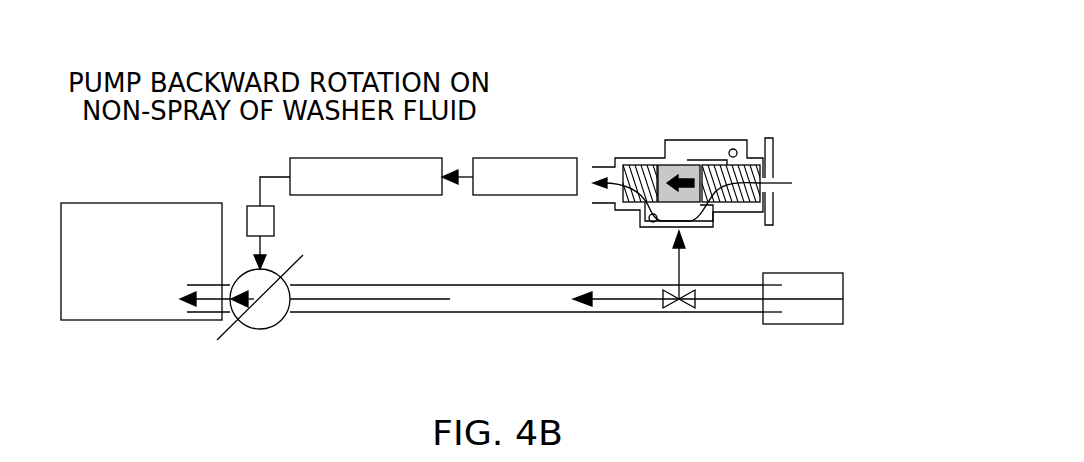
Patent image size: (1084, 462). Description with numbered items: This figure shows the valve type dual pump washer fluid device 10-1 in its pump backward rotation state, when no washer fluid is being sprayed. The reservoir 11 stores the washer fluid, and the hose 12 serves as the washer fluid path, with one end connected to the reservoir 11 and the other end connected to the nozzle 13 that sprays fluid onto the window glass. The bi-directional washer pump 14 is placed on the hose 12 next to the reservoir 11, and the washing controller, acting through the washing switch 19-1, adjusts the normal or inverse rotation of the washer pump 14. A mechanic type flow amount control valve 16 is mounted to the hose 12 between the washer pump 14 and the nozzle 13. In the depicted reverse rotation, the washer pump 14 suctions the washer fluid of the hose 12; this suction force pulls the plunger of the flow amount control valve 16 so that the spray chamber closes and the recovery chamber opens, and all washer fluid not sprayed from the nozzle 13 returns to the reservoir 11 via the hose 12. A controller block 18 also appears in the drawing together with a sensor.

The valve type dual pump washer fluid device 10-1 is at (557, 117).
The reservoir 11 is at (125, 222).
The hose 12 is at (540, 285).
The nozzle 13 is at (831, 273).
The washer pump 14 is at (272, 312).
The flow amount control valve 16 is at (696, 292).
The controller 18 is at (415, 195).
The washing switch 19-1 is at (274, 221).